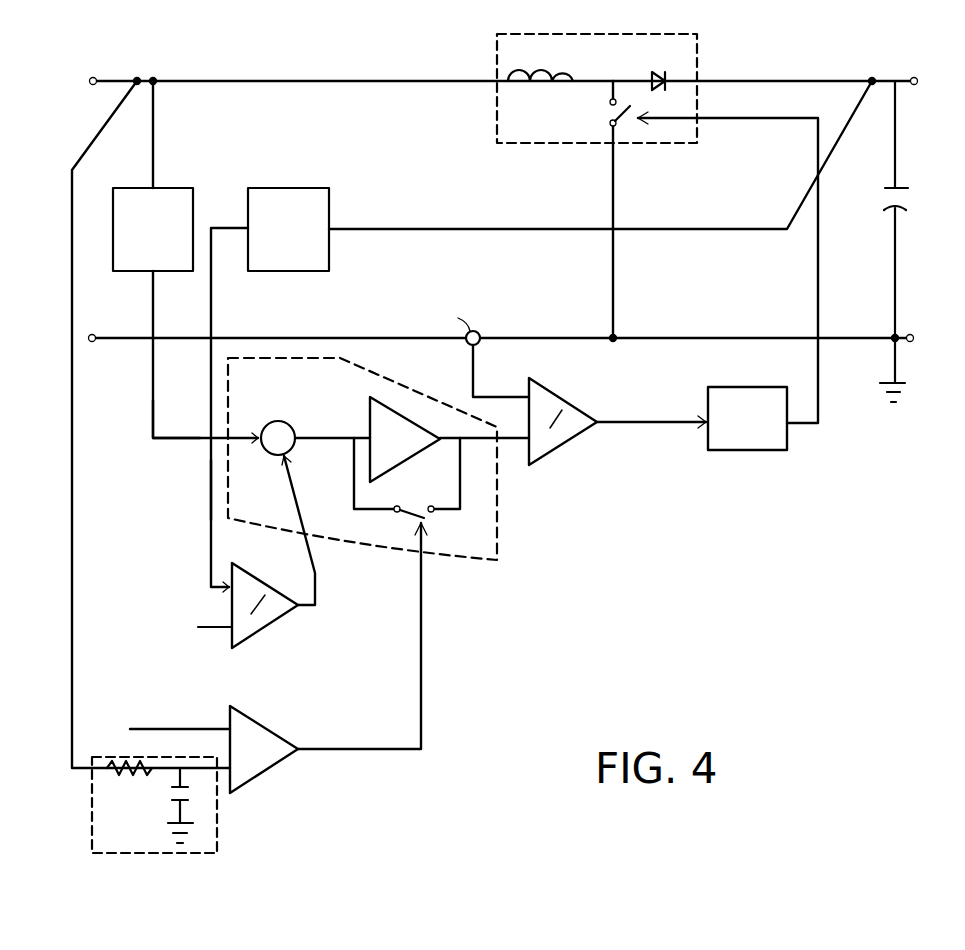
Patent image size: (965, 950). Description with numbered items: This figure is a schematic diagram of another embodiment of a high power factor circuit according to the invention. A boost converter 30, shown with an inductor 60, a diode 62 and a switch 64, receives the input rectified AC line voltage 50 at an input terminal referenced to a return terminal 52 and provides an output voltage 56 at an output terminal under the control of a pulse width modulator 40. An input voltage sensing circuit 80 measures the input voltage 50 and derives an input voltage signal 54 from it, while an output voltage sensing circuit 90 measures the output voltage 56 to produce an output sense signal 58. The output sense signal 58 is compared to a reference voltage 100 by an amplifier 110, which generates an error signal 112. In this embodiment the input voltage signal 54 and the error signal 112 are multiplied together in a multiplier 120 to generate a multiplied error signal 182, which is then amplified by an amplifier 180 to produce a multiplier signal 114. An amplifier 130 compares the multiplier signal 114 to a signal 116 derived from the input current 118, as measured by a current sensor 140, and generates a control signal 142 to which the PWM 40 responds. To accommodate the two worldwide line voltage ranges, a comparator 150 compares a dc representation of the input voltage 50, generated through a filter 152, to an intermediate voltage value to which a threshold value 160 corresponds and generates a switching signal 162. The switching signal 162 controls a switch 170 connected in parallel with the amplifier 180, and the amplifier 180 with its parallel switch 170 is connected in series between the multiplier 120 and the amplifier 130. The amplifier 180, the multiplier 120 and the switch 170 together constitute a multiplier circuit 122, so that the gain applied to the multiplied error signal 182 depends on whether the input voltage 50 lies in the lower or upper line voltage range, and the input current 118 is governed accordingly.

The boost converter 30 is at (698, 35).
The pulse width modulator 40 is at (788, 443).
The input voltage 50 is at (108, 63).
The return terminal 52 is at (92, 341).
The input voltage signal 54 is at (188, 415).
The output voltage 56 is at (925, 73).
The output sense signal 58 is at (178, 490).
The inductor 60 is at (523, 88).
The diode 62 is at (668, 74).
The switch 64 is at (622, 126).
The input voltage sensing circuit 80 is at (168, 183).
The output voltage sensing circuit 90 is at (329, 200).
The reference voltage 100 is at (175, 637).
The amplifier 110 is at (250, 640).
The error signal 112 is at (288, 575).
The multiplier signal 114 is at (483, 467).
The current sense voltage Vi line 116 is at (447, 388).
The input current 118 is at (462, 298).
The multiplier 120 is at (278, 420).
The multiplier circuit 122 is at (506, 563).
The amplifier 130 is at (557, 448).
The current sensor 140 is at (479, 343).
The control signal 142 is at (643, 398).
The comparator 150 is at (257, 780).
The filter 152 is at (217, 840).
The threshold value 160 is at (135, 727).
The switching signal 162 is at (330, 718).
The switch 170 is at (412, 502).
The amplifier 180 is at (398, 410).
The multiplied error signal 182 is at (338, 415).